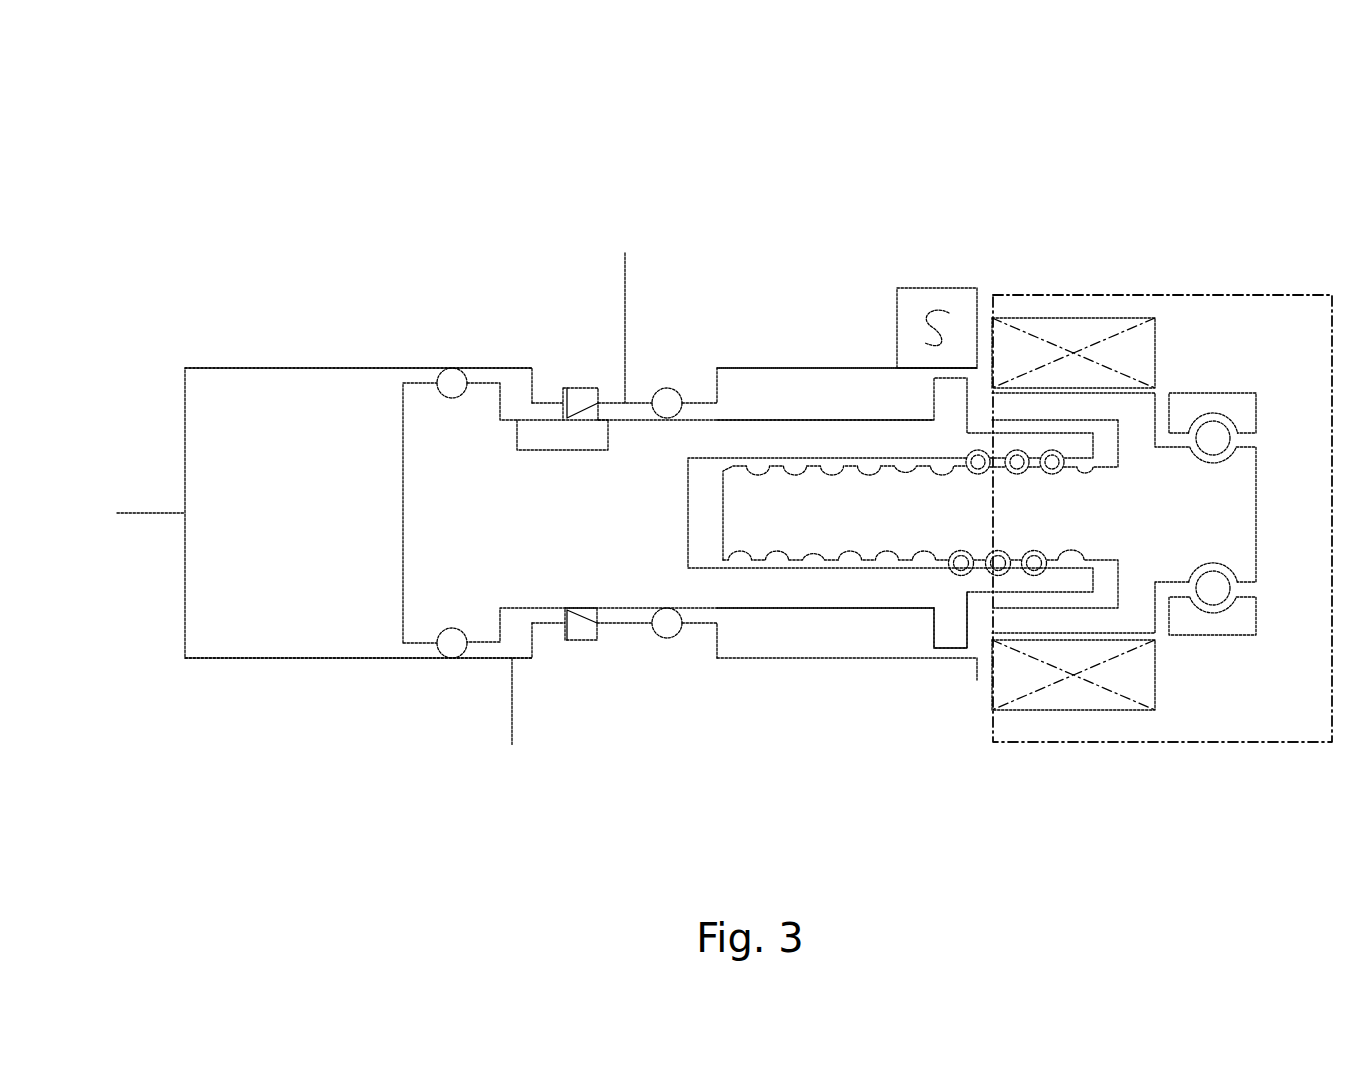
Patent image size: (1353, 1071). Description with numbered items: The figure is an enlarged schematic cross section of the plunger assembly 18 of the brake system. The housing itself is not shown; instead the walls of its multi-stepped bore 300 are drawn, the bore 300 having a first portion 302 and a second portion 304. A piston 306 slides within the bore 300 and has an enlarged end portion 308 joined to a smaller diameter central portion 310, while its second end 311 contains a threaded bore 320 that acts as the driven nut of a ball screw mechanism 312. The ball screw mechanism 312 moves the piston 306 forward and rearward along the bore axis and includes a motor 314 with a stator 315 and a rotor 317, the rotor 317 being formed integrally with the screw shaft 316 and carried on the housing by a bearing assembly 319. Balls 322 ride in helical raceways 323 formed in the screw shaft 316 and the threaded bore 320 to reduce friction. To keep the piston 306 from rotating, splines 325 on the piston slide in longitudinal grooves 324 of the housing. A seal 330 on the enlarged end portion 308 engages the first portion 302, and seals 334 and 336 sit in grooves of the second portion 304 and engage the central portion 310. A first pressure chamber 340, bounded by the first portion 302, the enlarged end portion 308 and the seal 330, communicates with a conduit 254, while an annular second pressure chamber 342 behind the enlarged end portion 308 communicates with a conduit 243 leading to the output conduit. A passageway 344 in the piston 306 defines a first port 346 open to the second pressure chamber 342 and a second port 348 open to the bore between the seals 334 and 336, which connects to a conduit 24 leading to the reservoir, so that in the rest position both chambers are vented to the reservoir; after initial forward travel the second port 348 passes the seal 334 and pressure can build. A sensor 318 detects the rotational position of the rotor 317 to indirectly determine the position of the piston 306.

The plunger assembly 18 is at (1218, 108).
The conduit 24 is at (623, 278).
The conduit 243 is at (508, 727).
The conduit 254 is at (145, 513).
The multi-stepped bore 300 is at (322, 658).
The first portion 302 is at (228, 388).
The second portion 304 is at (698, 622).
The piston 306 is at (748, 437).
The enlarged end portion 308 is at (418, 393).
The central portion 310 is at (810, 590).
The second end 311 is at (1060, 578).
The ball screw mechanism 312 is at (1222, 274).
The motor 314 is at (1054, 283).
The stator 315 is at (1024, 317).
The screw shaft 316 is at (844, 497).
The rotor 317 is at (1083, 405).
The sensor 318 is at (915, 287).
The bearing assembly 319 is at (1238, 386).
The threaded bore 320 is at (1030, 577).
The balls 322 is at (977, 457).
The helical raceways 323 is at (852, 552).
The longitudinal grooves 324 is at (860, 658).
The splines 325 is at (950, 633).
The seal 330 is at (452, 383).
The seal 334 is at (583, 630).
The seal 336 is at (670, 625).
The first pressure chamber 340 is at (213, 457).
The second pressure chamber 342 is at (513, 387).
The passageway 344 is at (567, 452).
The first port 346 is at (517, 420).
The second port 348 is at (608, 420).